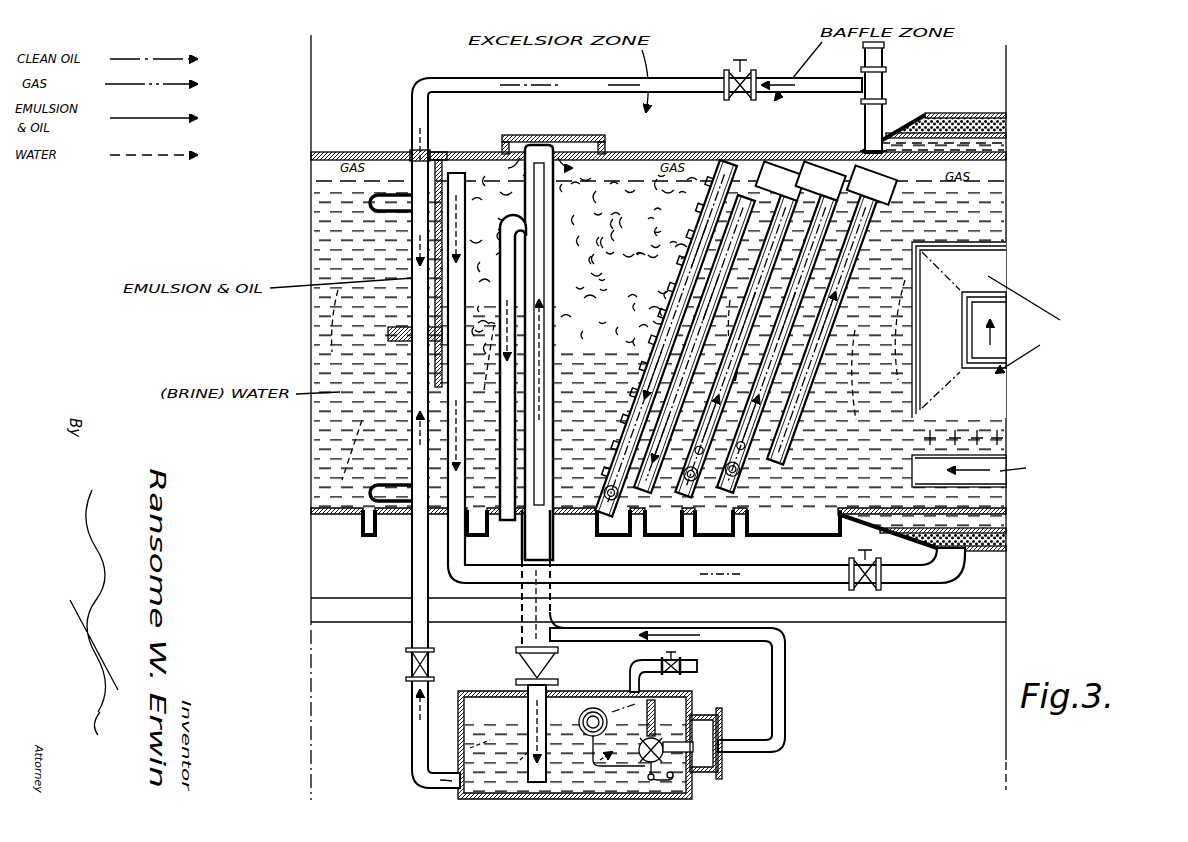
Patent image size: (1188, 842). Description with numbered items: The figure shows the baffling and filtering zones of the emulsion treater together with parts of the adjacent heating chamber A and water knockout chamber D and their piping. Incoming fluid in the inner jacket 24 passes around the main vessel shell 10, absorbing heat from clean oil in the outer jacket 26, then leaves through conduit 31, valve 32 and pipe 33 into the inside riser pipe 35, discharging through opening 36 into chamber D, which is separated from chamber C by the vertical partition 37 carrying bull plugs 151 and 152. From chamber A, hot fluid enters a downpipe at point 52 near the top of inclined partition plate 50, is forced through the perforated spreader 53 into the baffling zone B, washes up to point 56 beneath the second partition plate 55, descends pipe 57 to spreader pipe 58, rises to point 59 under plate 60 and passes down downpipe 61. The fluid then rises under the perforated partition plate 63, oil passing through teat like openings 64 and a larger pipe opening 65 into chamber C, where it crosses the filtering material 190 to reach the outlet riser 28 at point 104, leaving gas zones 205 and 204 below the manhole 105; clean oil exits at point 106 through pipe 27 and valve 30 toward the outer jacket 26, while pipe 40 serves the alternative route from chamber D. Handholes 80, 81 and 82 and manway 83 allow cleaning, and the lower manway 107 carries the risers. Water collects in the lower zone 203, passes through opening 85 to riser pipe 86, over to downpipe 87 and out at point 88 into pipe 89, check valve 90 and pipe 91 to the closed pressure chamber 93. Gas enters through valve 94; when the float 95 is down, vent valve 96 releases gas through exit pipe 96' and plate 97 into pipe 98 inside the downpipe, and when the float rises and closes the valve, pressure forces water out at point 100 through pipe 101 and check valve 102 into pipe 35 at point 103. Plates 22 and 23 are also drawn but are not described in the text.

The main vessel shell 10 is at (312, 160).
The spreader plate 22 is at (968, 116).
The porous spreader layer 23 is at (930, 118).
The inner jacket 24 is at (985, 145).
The outer jacket 26 is at (1003, 129).
The pipe 27 is at (780, 570).
The outlet riser 28 is at (468, 218).
The valve 30 is at (870, 578).
The conduit 31 is at (882, 82).
The valve 32 is at (745, 72).
The pipe 33 is at (544, 80).
The inside riser pipe 35 is at (415, 158).
The opening 36 is at (405, 345).
The partition plate 37 is at (434, 243).
The pipe 40 is at (907, 617).
The inclined partition plate 50 is at (760, 462).
The point 52 is at (878, 180).
The cross pipe or spreader 53 is at (745, 470).
The second partition plate 55 is at (820, 185).
The point 56 is at (850, 172).
The pipe 57 is at (762, 232).
The spreader pipe 58 is at (745, 482).
The point 59 is at (790, 182).
The plate 60 is at (613, 457).
The downpipe 61 is at (717, 267).
The perforated partition plate 63 is at (722, 175).
The teat like openings 64 is at (738, 190).
The pipe opening 65 is at (668, 262).
The handhole 80 is at (740, 533).
The handhole 81 is at (690, 532).
The handhole 82 is at (628, 533).
The manway 83 is at (808, 533).
The opening 85 is at (575, 536).
The riser pipe 86 is at (553, 293).
The downpipe 87 is at (557, 278).
The outlet point 88 is at (522, 540).
The pipe 89 is at (521, 590).
The check valve 90 is at (520, 668).
The pipe 91 is at (528, 710).
The closed pressure chamber 93 is at (460, 748).
The valve 94 is at (665, 662).
The float 95 is at (595, 708).
The vent valve 96 is at (687, 751).
The exit pipe 96' is at (800, 702).
The plate 97 is at (720, 722).
The pipe 98 is at (544, 327).
The point 100 is at (457, 790).
The pipe 101 is at (412, 702).
The check valve 102 is at (410, 665).
The point 103 is at (415, 430).
The point 104 is at (455, 172).
The manhole 105 is at (582, 136).
The point 106 is at (467, 570).
The lower manway 107 is at (448, 562).
The bull plug 151 is at (368, 205).
The bull plug 152 is at (368, 493).
The filtering material 190 is at (613, 253).
The lower zone 203 is at (433, 515).
The gas zone 204 is at (550, 140).
The gas zone 205 is at (500, 142).
The heating chamber A is at (992, 213).
The washing and baffling chamber B is at (808, 240).
The filtering or settling chamber C is at (628, 178).
The water knockout chamber D is at (318, 195).